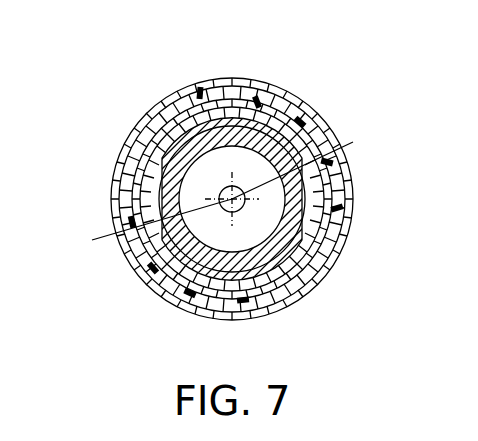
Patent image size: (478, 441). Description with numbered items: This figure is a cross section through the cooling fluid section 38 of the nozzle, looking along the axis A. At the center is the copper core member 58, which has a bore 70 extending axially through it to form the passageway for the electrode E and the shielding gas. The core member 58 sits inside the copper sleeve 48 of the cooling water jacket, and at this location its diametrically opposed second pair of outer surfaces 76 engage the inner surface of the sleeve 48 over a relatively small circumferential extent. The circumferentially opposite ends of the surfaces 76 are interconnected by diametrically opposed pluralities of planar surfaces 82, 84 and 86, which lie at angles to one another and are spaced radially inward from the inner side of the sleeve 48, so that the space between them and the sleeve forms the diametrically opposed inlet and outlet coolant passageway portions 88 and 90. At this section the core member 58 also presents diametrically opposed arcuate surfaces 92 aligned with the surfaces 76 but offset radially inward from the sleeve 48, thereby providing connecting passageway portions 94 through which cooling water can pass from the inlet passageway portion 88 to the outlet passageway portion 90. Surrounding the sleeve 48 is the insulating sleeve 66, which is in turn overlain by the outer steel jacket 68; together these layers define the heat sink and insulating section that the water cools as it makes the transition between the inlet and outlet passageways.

The cooling fluid section 38 is at (308, 90).
The copper sleeve 48 is at (150, 123).
The copper core member 58 is at (165, 193).
The insulating sleeve 66 is at (163, 105).
The outer steel jacket 68 is at (195, 92).
The bore 70 is at (262, 250).
The second pair of outer surfaces 76 is at (272, 98).
The planar surface 82 is at (133, 267).
The planar surface 84 is at (125, 212).
The planar surface 86 is at (137, 138).
The inlet coolant passageway portion 88 is at (340, 192).
The outlet coolant passageway portion 90 is at (122, 163).
The arcuate surface 92 is at (245, 94).
The connecting passageway portion 94 is at (220, 90).
The axis A is at (152, 226).
The electrode E is at (303, 165).